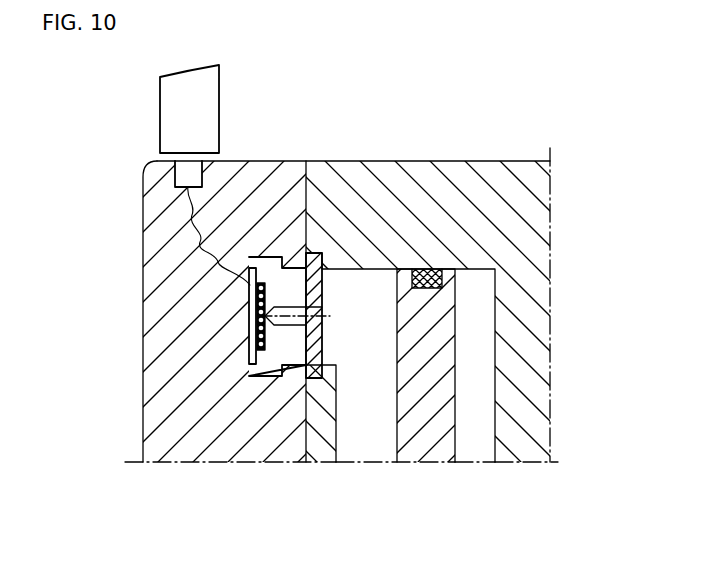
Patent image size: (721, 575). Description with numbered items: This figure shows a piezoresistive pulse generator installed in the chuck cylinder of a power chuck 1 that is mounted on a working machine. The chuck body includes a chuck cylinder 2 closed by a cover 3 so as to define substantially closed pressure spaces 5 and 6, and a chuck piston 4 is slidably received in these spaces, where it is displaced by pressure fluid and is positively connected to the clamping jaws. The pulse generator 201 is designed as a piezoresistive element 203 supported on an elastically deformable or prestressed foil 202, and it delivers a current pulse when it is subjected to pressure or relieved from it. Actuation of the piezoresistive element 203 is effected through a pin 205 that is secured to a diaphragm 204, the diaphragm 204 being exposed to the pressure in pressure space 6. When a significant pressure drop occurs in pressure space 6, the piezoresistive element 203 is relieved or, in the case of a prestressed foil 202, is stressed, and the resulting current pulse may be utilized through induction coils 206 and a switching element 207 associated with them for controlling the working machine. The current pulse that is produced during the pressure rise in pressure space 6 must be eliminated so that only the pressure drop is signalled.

The power chuck 1 is at (428, 152).
The chuck cylinder 2 is at (469, 187).
The cover 3 is at (277, 163).
The chuck piston 4 is at (448, 380).
The pressure space 5 is at (483, 323).
The pressure space 6 is at (370, 435).
The pulse generator 201 is at (230, 344).
The foil 202 is at (252, 325).
The piezoresistive element 203 is at (250, 300).
The diaphragm 204 is at (315, 293).
The pin 205 is at (292, 323).
The induction coils 206 is at (183, 176).
The switching element 207 is at (208, 112).